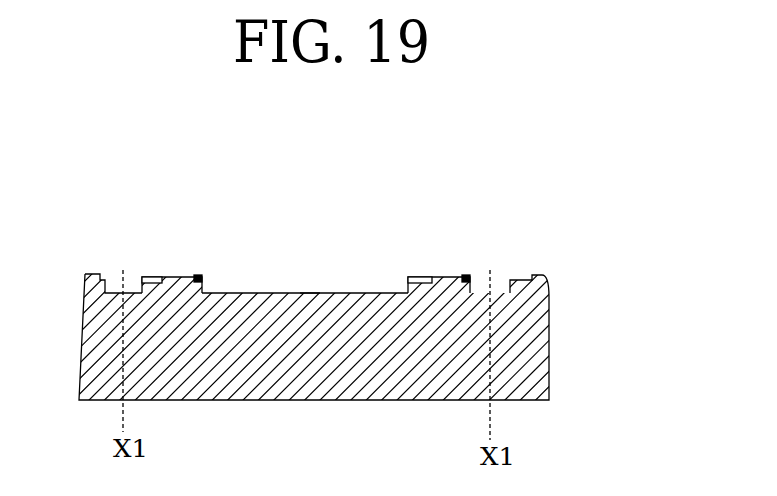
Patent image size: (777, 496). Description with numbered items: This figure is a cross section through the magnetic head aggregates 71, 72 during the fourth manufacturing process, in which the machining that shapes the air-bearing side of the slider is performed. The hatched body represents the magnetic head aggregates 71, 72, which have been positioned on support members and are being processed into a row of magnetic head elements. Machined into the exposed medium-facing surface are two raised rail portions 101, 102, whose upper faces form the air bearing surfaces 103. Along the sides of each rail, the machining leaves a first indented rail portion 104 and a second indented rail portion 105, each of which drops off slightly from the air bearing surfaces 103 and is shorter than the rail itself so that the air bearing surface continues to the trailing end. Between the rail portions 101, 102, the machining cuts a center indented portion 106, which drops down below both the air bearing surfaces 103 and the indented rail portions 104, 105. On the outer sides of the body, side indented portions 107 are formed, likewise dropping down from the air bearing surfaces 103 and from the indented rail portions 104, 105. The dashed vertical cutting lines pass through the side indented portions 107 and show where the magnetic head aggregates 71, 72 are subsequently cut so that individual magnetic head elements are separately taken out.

The magnetic head aggregate 71 is at (388, 248).
The magnetic head aggregate 72 is at (540, 360).
The rail portion 101 is at (204, 291).
The rail portion 102 is at (409, 291).
The air bearing surface 103 is at (184, 276).
The first indented rail portion 104 is at (153, 276).
The second indented rail portion 105 is at (198, 275).
The center indented portion 106 is at (308, 292).
The indented side portion 107 is at (139, 292).